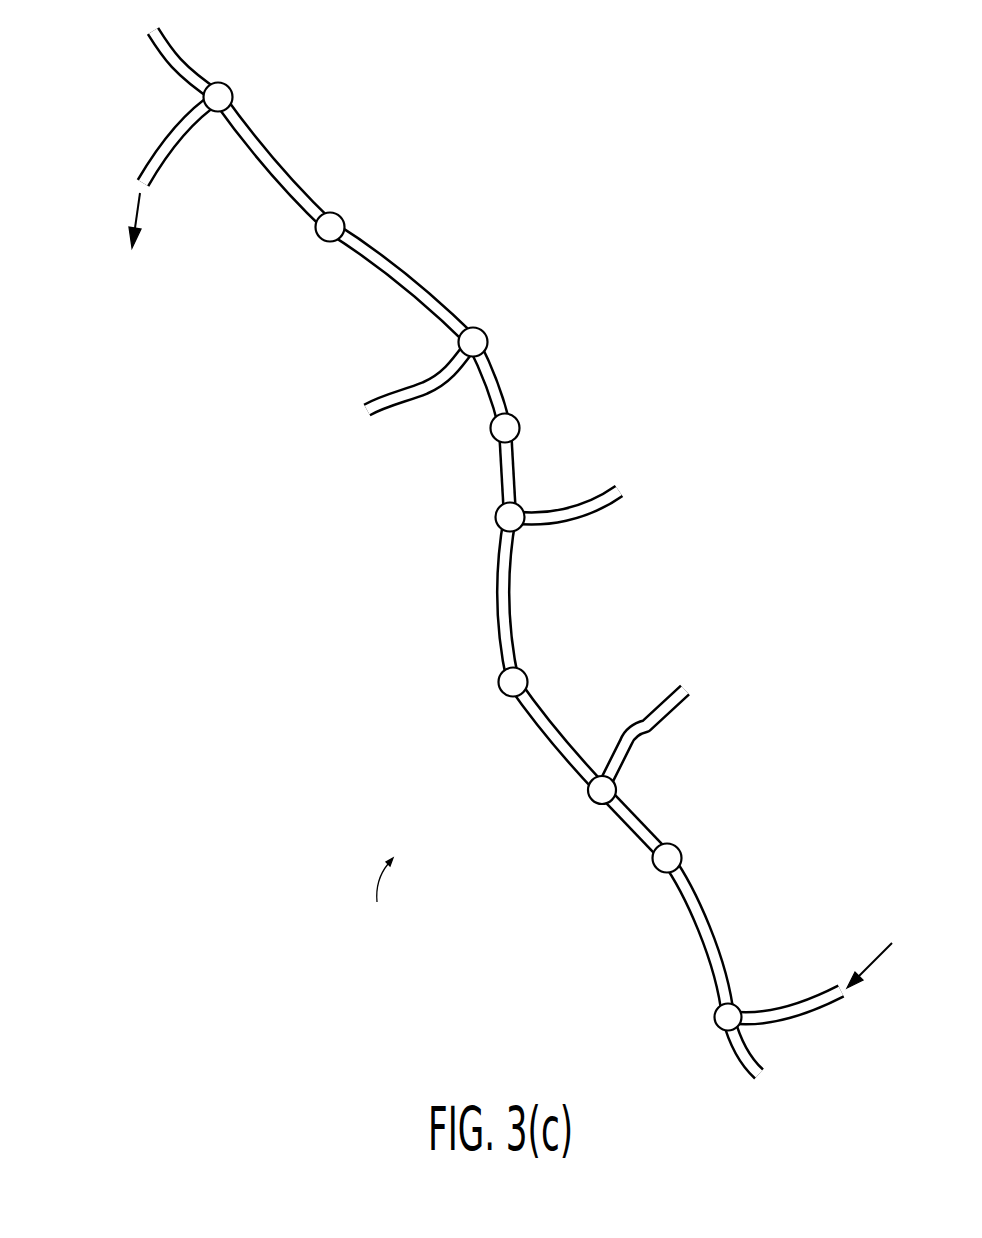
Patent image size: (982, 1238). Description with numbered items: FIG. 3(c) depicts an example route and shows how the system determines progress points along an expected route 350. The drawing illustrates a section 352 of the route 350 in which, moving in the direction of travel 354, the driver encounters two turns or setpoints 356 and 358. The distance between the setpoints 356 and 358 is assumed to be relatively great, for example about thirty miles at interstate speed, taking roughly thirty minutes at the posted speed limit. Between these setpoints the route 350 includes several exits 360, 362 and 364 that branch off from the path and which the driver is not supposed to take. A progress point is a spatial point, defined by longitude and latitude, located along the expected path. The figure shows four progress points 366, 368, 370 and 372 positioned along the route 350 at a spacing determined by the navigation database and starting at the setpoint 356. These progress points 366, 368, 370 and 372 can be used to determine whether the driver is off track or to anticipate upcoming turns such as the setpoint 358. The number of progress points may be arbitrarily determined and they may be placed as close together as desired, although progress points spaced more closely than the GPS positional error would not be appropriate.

The expected route 350 is at (158, 130).
The section of the route 352 is at (380, 898).
The direction of travel 354 is at (139, 212).
The setpoint 356 is at (727, 1018).
The setpoint 358 is at (220, 92).
The exit 360 is at (595, 792).
The exit 362 is at (500, 518).
The exit 364 is at (475, 340).
The progress point 366 is at (663, 860).
The progress point 368 is at (503, 685).
The progress point 370 is at (512, 427).
The progress point 372 is at (330, 222).